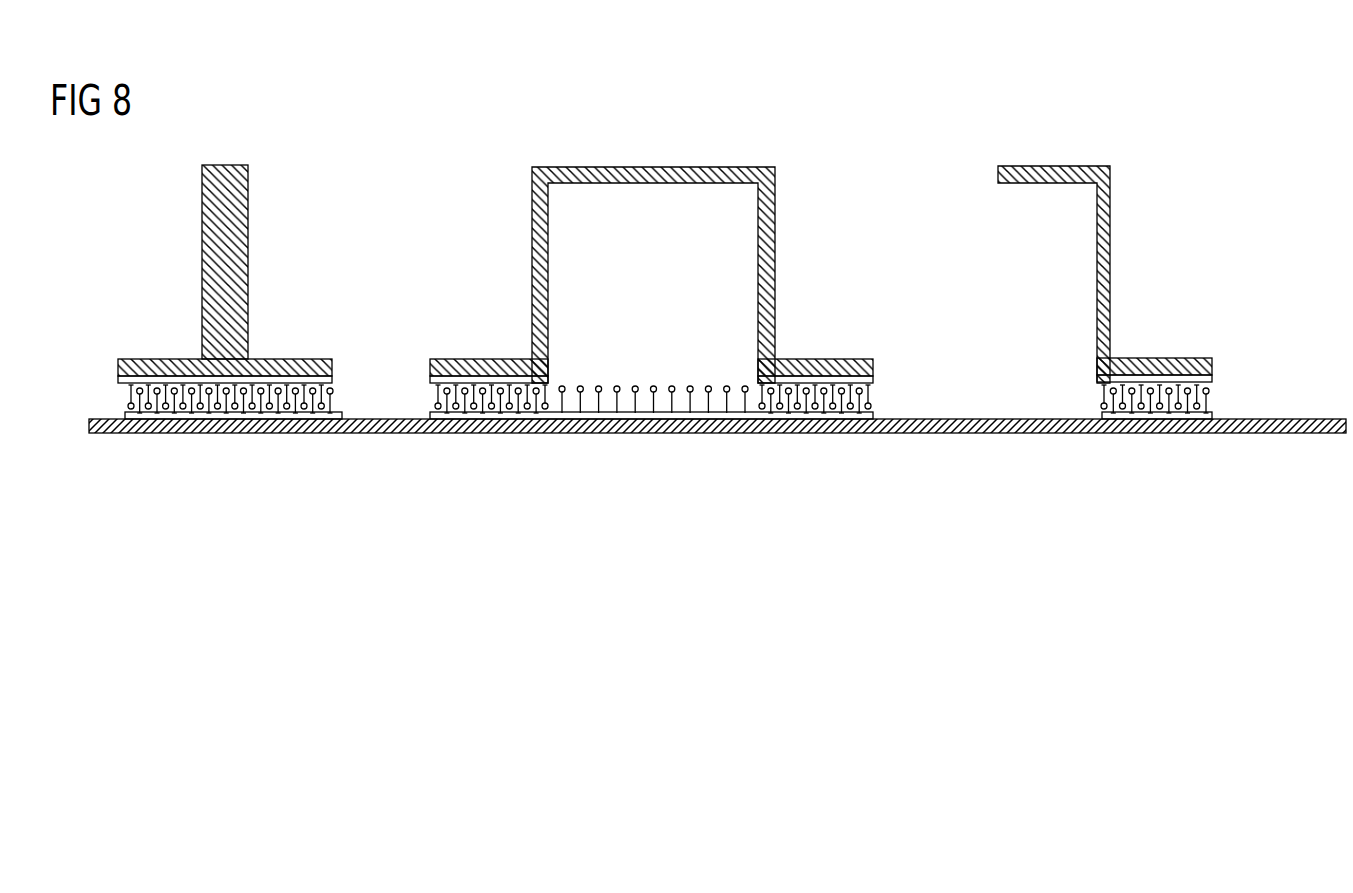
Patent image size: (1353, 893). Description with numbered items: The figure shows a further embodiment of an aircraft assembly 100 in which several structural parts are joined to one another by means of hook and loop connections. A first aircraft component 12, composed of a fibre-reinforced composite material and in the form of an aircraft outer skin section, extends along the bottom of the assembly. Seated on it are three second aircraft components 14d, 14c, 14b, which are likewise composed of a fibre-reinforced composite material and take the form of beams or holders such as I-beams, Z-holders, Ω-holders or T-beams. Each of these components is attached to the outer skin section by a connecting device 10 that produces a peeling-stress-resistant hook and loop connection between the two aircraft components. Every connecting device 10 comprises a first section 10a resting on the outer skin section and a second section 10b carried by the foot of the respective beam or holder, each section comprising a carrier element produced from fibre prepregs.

The arrangement 100 is at (1221, 115).
The first aircraft component 12 is at (960, 433).
The second aircraft component 14d is at (240, 218).
The second aircraft component 14c is at (775, 236).
The second aircraft component 14b is at (1106, 229).
The connecting device 10 is at (425, 381).
The first section 10a is at (430, 417).
The second section 10b is at (121, 378).